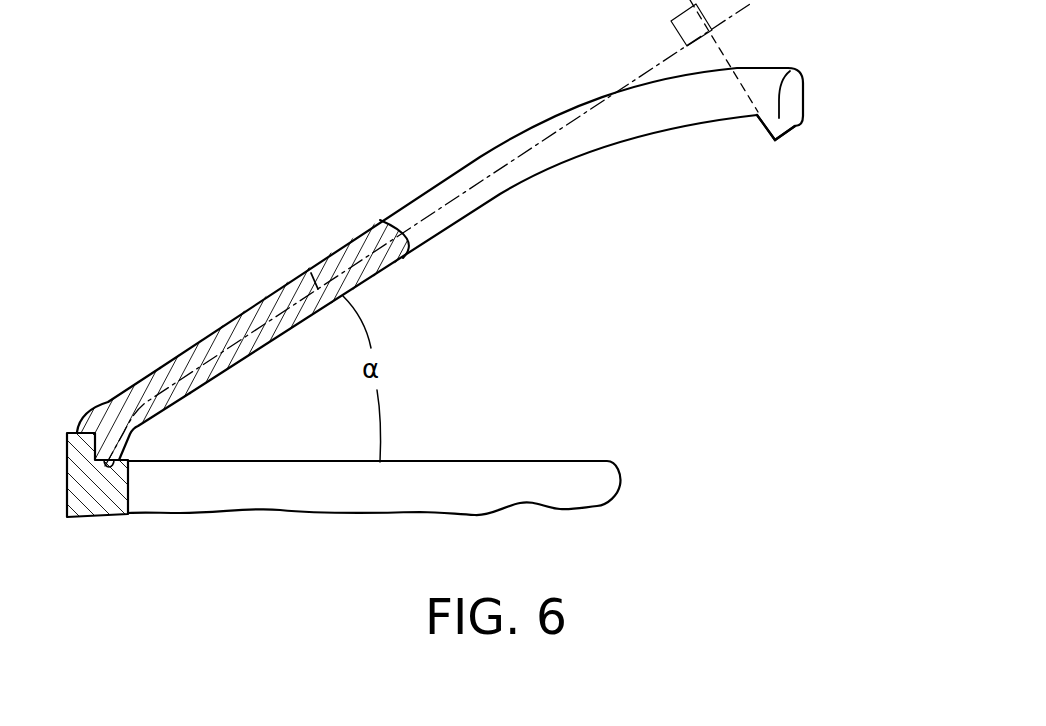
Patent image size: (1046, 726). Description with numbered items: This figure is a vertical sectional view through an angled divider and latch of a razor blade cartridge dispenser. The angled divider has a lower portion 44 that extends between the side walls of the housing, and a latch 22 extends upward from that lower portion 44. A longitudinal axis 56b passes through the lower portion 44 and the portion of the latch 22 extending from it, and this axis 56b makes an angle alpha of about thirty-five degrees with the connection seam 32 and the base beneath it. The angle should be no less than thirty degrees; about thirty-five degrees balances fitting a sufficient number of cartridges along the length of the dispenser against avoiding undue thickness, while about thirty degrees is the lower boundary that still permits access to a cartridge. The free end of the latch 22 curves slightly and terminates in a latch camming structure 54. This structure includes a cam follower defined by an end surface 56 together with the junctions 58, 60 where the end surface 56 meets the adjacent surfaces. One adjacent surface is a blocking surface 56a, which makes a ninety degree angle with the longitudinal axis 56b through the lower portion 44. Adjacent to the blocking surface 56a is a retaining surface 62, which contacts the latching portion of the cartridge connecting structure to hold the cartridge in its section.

The latch 22 is at (468, 165).
The connection seam 32 is at (567, 461).
The lower portion 44 is at (152, 372).
The latch camming structure 54 is at (787, 70).
The end surface 56 is at (793, 128).
The blocking surface 56a is at (758, 125).
The longitudinal axis 56b is at (310, 270).
The junction 58 is at (800, 122).
The junction 60 is at (774, 138).
The retaining surface 62 is at (633, 140).